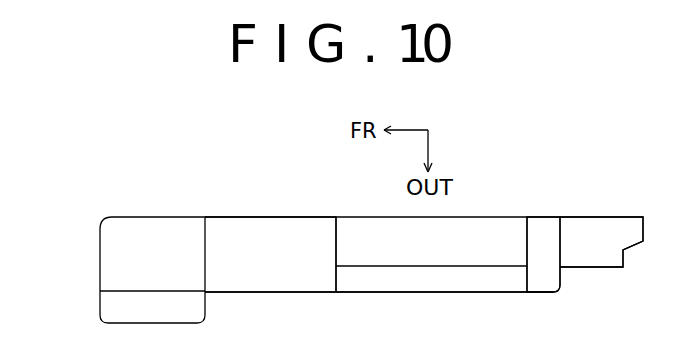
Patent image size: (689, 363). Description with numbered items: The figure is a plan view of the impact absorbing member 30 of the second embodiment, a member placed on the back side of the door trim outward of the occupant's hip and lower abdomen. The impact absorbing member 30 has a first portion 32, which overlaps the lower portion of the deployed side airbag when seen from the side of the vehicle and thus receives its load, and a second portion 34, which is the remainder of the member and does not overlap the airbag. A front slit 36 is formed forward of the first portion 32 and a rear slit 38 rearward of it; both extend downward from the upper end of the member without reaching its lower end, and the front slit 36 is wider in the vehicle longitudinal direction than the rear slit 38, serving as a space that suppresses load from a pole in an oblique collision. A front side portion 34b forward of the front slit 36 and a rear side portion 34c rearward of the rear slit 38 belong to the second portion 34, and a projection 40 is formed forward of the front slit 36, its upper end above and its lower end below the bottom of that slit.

The impact absorbing member 30 is at (303, 217).
The first portion 32 is at (417, 252).
The second portion 34 is at (447, 278).
The front side portion 34b is at (147, 227).
The rear side portion 34c is at (586, 258).
The front slit 36 is at (245, 252).
The rear slit 38 is at (540, 243).
The projection 40 is at (120, 308).